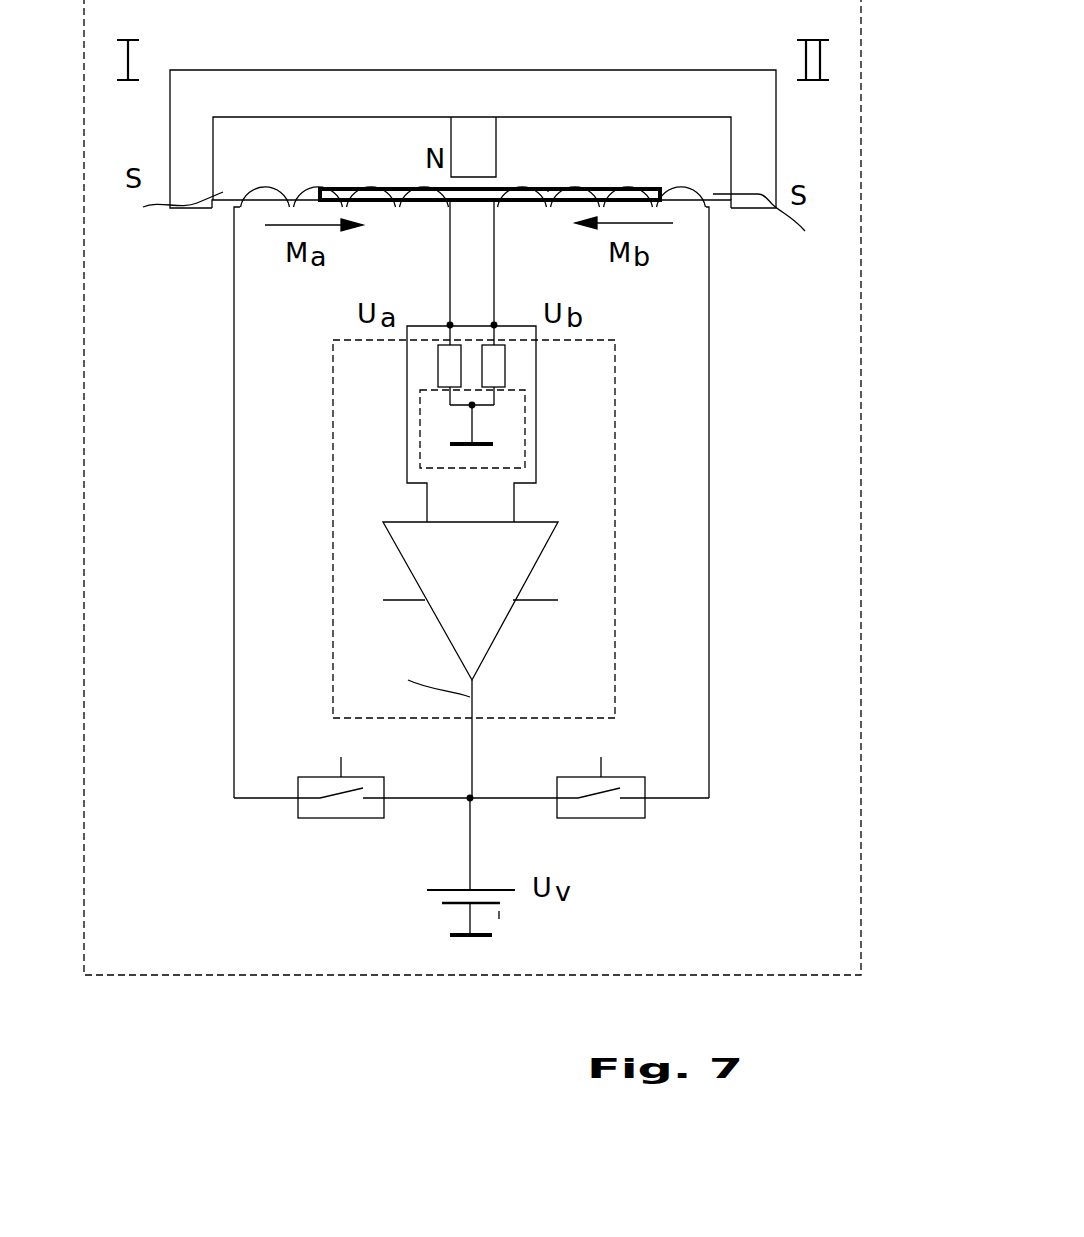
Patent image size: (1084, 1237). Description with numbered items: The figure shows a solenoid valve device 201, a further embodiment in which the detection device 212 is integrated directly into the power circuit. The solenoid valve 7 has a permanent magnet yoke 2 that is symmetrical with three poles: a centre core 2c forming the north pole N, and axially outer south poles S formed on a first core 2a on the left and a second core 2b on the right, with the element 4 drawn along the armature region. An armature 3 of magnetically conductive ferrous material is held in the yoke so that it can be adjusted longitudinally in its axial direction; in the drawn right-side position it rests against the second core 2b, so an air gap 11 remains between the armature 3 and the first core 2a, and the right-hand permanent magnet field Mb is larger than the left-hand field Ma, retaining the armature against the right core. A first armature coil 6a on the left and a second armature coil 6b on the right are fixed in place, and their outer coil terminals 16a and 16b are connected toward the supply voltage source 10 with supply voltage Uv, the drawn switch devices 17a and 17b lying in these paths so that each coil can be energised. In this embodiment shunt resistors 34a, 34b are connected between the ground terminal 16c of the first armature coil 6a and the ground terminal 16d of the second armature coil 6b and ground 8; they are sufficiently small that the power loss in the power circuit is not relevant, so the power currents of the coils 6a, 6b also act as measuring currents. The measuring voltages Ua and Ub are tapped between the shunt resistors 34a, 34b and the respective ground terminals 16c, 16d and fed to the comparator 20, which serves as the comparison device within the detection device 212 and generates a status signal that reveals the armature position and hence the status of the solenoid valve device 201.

The permanent magnet yoke 2 is at (710, 143).
The first core (pole base) 2a is at (162, 215).
The second core (pole base) 2b is at (777, 229).
The centre core 2c is at (458, 135).
The armature 3 is at (548, 192).
The permanent magnet 4 is at (652, 192).
The first armature coil 6a is at (366, 180).
The second armature coil 6b is at (577, 182).
The solenoid valve 7 is at (840, 122).
The ground 8 is at (472, 438).
The supply voltage source 10 is at (443, 897).
The air gap 11 is at (291, 165).
The first coil terminal 16a is at (233, 212).
The second coil terminal 16b is at (710, 207).
The ground terminal of the first armature coil 16c is at (450, 203).
The ground terminal of the second armature coil 16d is at (497, 203).
The first measuring switch device 17a is at (388, 783).
The second measuring switch device 17b is at (557, 783).
The comparator 20 is at (480, 620).
The first shunt resistor 34a is at (438, 367).
The second shunt resistor 34b is at (505, 367).
The solenoid valve device 201 is at (197, 997).
The detection device 212 is at (463, 520).